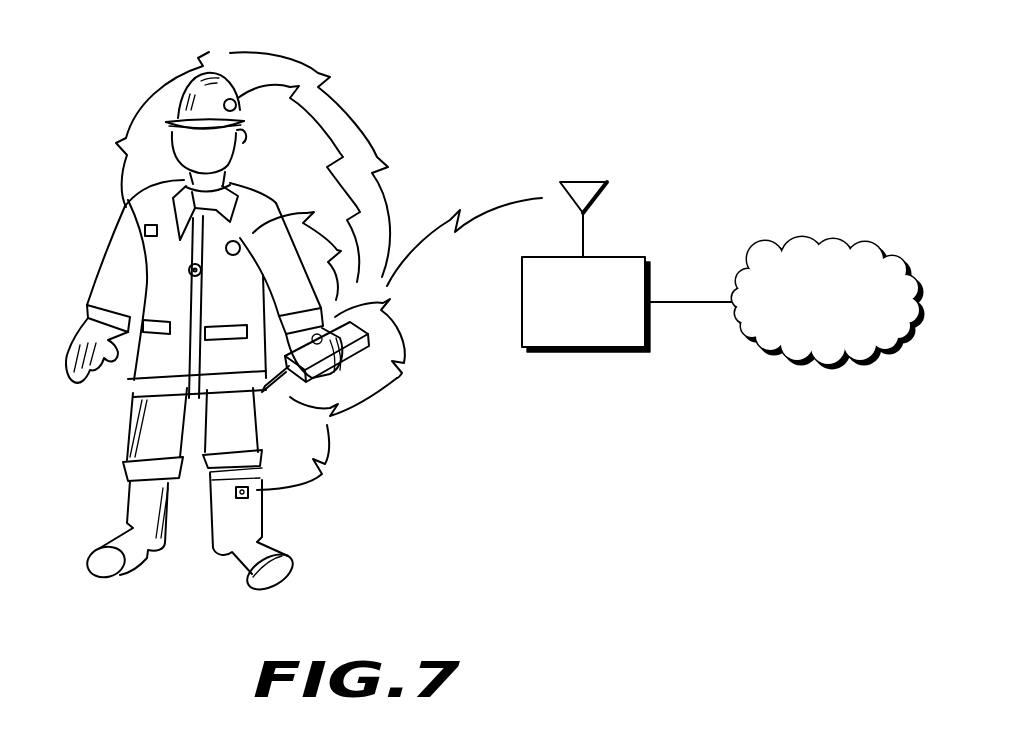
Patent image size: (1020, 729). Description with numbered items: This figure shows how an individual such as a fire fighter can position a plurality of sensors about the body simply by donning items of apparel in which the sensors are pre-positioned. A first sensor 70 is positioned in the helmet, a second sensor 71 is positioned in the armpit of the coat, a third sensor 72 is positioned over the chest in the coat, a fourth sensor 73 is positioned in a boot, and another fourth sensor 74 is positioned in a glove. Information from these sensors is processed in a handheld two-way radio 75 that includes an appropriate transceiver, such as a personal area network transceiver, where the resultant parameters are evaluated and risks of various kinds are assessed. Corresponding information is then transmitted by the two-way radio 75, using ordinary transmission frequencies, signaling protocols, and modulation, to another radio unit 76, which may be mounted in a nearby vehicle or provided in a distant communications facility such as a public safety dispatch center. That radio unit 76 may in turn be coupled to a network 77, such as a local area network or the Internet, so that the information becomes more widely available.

The first sensor 70 is at (231, 99).
The second sensor 71 is at (145, 230).
The third sensor 72 is at (239, 242).
The fourth sensor 73 is at (248, 495).
The fourth sensor 74 is at (347, 352).
The handheld two-way radio 75 is at (372, 326).
The radio unit 76 is at (613, 258).
The network 77 is at (863, 240).